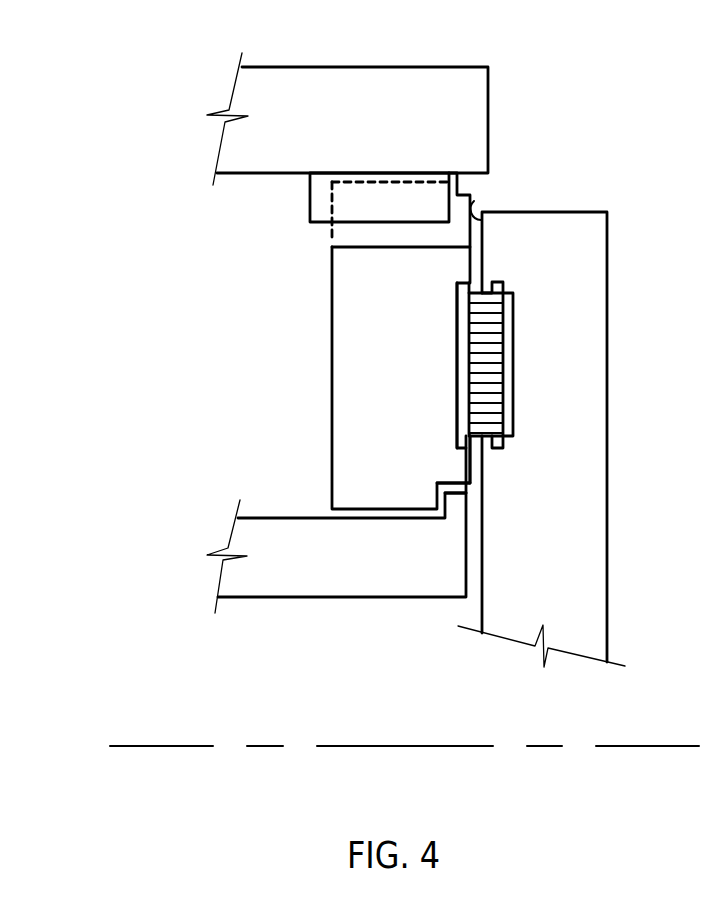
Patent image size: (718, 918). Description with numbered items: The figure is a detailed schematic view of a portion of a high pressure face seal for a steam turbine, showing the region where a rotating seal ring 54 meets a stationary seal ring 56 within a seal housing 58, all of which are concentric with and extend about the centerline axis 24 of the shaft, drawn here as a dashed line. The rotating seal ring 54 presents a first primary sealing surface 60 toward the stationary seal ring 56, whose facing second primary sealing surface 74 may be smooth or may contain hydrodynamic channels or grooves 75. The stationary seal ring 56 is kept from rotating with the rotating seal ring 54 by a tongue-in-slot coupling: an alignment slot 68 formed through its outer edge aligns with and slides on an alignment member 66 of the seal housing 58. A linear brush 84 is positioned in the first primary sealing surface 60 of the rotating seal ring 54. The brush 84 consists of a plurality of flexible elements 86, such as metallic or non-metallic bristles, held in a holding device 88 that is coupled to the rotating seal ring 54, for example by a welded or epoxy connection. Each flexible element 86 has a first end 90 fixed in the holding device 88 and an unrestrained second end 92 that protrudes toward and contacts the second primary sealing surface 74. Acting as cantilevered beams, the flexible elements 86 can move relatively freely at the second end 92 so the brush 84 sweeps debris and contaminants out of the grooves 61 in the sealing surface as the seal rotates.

The centerline axis 24 is at (128, 746).
The rotating seal ring 54 is at (607, 544).
The stationary seal ring 56 is at (332, 350).
The seal housing 58 is at (408, 67).
The first primary sealing surface 60 is at (470, 198).
The grooves 61 is at (503, 282).
The alignment member 66 is at (310, 202).
The alignment slot 68 is at (343, 236).
The second primary sealing surface 74 is at (468, 480).
The grooves 75 is at (455, 300).
The brush 84 is at (516, 386).
The flexible elements 86 is at (477, 437).
The holding device 88 is at (513, 339).
The first end 90 is at (503, 448).
The second end 92 is at (457, 433).